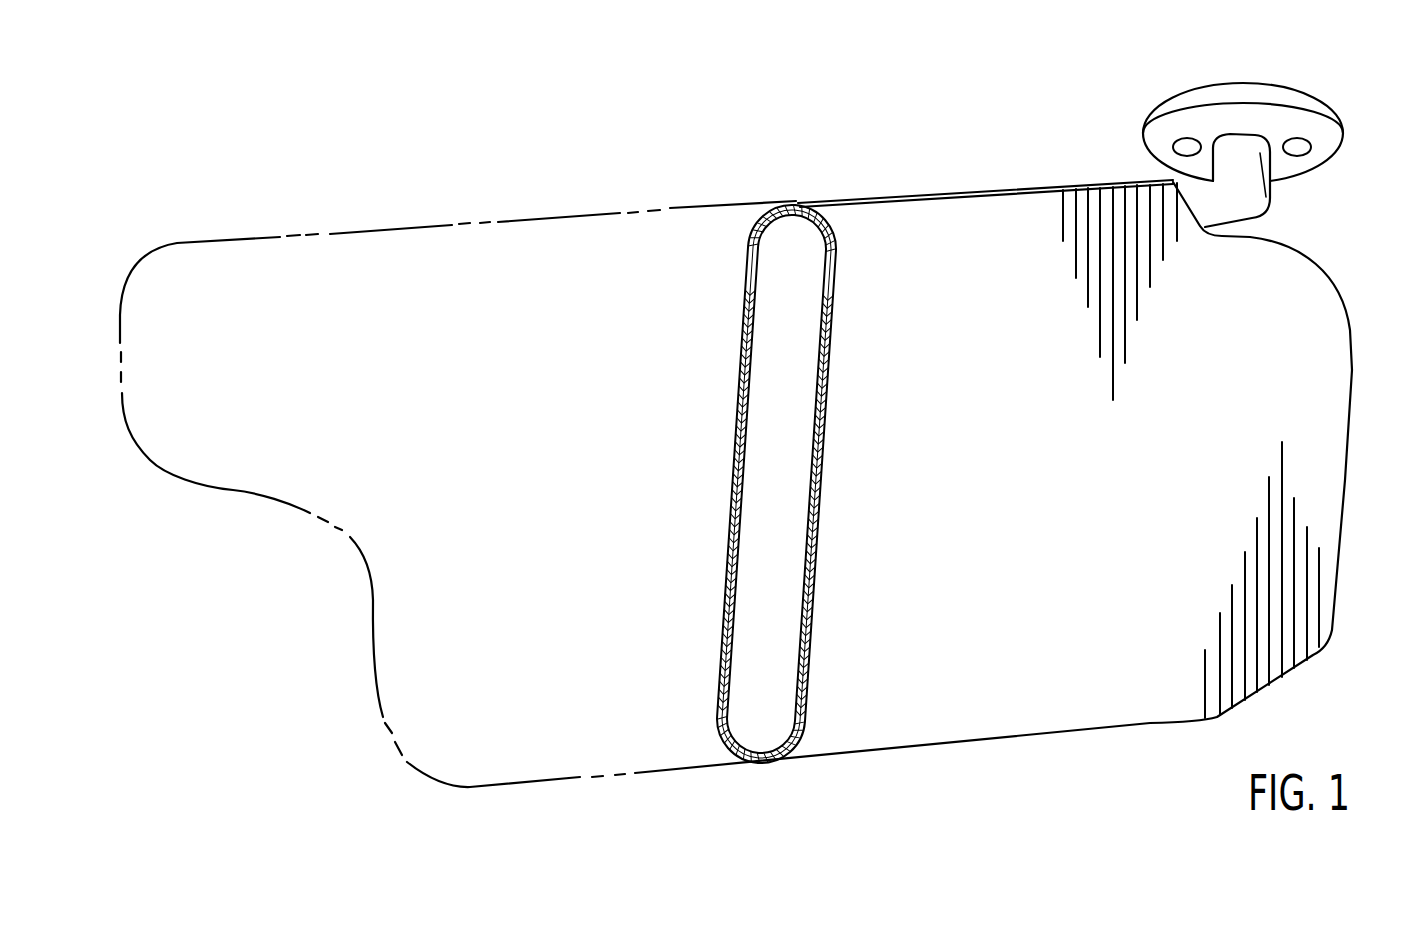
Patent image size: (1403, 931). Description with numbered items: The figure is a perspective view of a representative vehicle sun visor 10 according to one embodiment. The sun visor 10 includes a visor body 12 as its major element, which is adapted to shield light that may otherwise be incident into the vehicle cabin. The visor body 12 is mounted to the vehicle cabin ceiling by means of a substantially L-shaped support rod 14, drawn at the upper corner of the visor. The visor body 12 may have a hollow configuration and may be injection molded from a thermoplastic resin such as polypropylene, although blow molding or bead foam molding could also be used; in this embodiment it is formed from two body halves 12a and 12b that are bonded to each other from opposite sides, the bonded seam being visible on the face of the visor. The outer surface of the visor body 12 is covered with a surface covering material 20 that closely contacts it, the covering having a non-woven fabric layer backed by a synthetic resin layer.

The sun visor 10 is at (545, 204).
The visor body 12 is at (841, 487).
The body half 12a is at (750, 383).
The body half 12b is at (827, 428).
The support rod 14 is at (1250, 200).
The surface covering material 20 is at (841, 487).